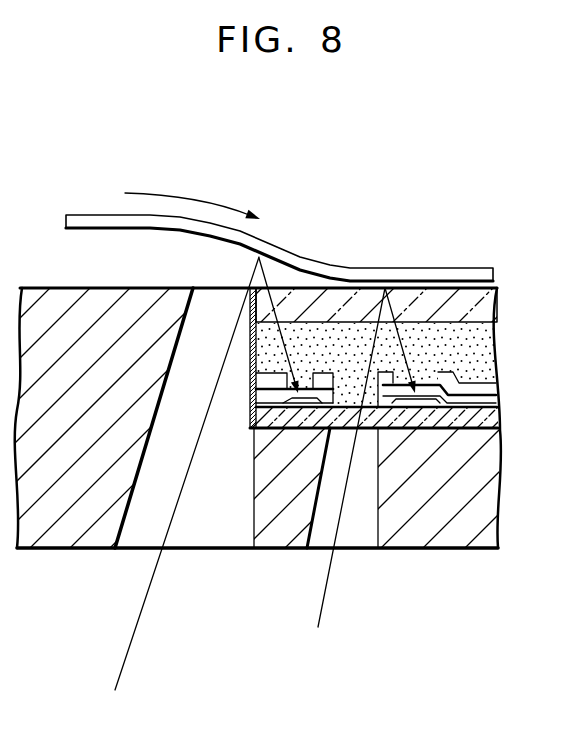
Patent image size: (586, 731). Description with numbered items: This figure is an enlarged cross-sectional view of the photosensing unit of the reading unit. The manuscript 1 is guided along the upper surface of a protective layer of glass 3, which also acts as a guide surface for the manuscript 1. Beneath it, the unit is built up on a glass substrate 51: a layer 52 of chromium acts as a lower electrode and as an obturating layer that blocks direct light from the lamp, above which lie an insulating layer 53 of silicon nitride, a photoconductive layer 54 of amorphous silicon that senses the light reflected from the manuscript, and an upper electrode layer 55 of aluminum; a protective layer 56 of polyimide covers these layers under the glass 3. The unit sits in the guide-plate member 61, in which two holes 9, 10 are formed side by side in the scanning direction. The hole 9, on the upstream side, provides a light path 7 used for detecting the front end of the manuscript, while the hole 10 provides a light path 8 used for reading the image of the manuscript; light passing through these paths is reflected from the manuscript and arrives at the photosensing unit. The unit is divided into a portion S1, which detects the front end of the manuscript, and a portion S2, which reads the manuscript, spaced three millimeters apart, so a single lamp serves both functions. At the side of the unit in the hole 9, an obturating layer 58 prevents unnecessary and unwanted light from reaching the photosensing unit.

The manuscript 1 is at (473, 268).
The protective layer of glass 3 is at (482, 303).
The light path 7 is at (128, 653).
The light path 8 is at (327, 585).
The hole 9 is at (137, 533).
The hole 10 is at (360, 535).
The glass substrate 51 is at (489, 419).
The lower electrode layer 52 is at (290, 406).
The insulating layer 53 is at (256, 447).
The photoconductive layer 54 is at (493, 394).
The upper electrode layer 55 is at (260, 375).
The protective layer 56 is at (483, 338).
The obturating layer 58 is at (252, 340).
The guide-plate member 61 is at (52, 493).
The portion of the photosensing unit S1 is at (301, 388).
The portion of the photosensing unit S2 is at (417, 388).